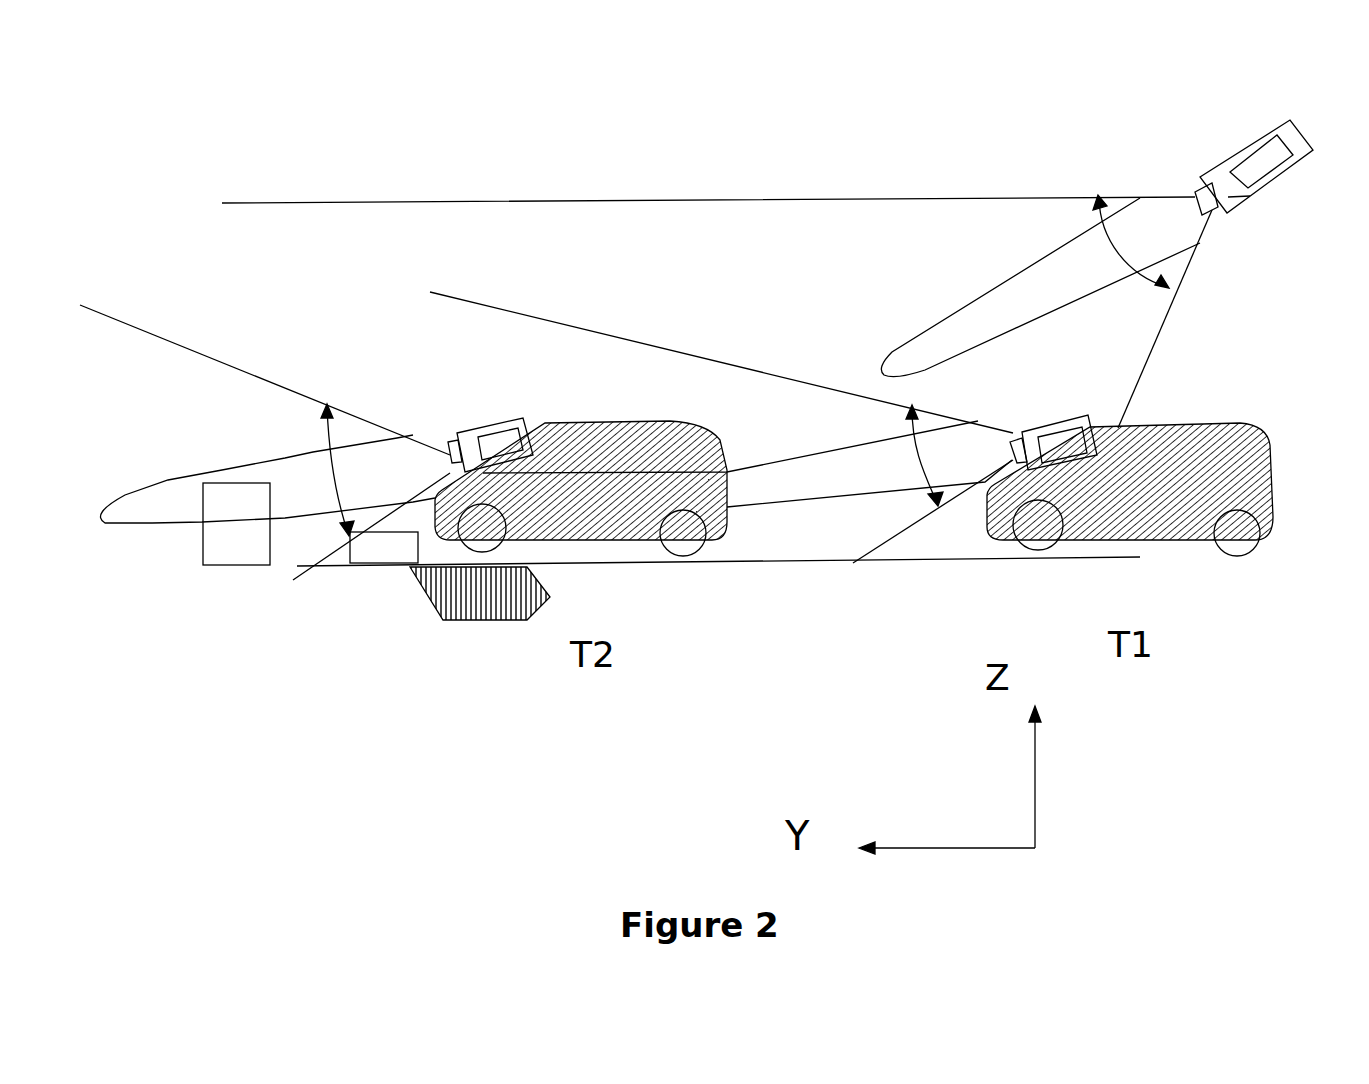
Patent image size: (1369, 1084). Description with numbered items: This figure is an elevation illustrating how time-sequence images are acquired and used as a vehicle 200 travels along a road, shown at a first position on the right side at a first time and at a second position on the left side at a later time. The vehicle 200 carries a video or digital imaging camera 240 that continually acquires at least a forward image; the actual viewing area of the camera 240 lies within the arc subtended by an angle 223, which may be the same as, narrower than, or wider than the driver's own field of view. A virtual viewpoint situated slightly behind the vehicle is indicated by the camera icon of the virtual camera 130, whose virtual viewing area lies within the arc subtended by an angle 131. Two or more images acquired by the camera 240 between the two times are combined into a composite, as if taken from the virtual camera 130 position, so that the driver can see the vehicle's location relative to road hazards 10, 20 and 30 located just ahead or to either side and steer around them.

The road hazard 10 is at (500, 622).
The road hazard 20 is at (375, 573).
The road hazard 30 is at (227, 573).
The virtual camera 130 is at (1207, 157).
The angle subtending the virtual viewing area 131 is at (1135, 241).
The vehicle 200 is at (592, 425).
The angle subtending the actual viewing area 223 is at (609, 470).
The video or digital imaging camera 240 is at (462, 427).